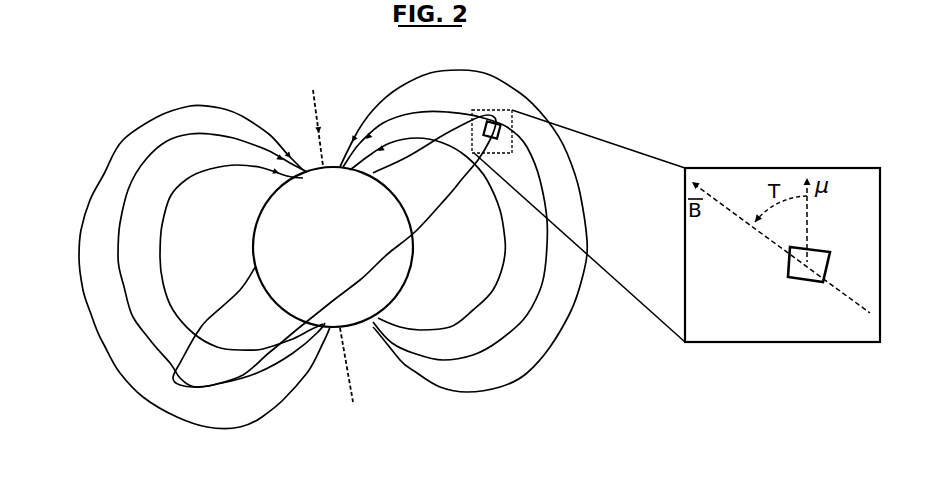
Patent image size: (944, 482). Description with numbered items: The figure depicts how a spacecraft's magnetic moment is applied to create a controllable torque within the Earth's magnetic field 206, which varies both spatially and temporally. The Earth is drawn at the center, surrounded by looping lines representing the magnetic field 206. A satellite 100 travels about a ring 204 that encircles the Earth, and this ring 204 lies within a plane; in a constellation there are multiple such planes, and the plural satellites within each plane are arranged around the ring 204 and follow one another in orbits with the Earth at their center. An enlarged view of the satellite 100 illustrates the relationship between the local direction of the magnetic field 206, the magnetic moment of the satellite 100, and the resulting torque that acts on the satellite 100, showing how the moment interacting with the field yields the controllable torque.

The satellite 100 is at (513, 130).
The ring 204 is at (439, 202).
The magnetic field 206 is at (138, 180).